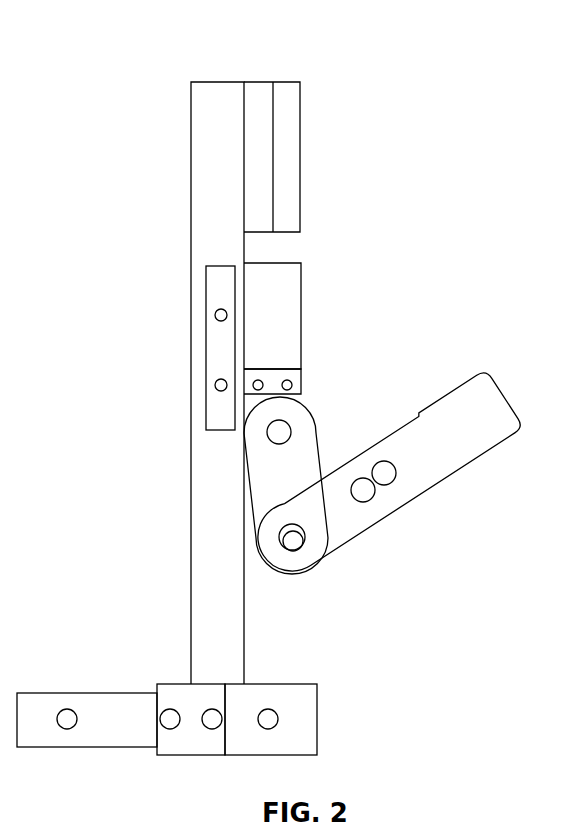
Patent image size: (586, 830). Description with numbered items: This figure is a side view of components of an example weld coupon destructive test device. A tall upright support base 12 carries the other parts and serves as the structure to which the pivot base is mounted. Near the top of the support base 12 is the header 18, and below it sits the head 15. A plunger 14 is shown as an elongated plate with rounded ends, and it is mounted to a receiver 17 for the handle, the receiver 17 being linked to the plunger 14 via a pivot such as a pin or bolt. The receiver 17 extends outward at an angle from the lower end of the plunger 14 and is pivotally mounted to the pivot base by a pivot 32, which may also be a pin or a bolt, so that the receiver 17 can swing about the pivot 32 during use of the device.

The support base 12 is at (217, 82).
The header 18 is at (302, 103).
The head 15 is at (302, 305).
The plunger 14 is at (318, 437).
The receiver 17 is at (440, 482).
The pivot 32 is at (293, 552).